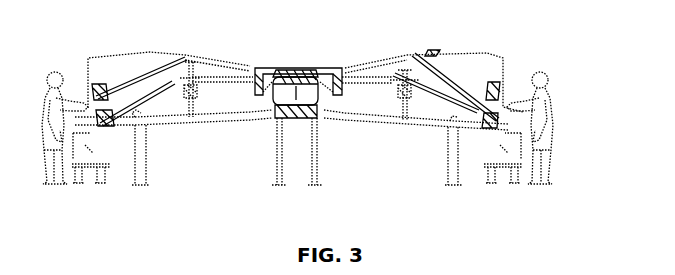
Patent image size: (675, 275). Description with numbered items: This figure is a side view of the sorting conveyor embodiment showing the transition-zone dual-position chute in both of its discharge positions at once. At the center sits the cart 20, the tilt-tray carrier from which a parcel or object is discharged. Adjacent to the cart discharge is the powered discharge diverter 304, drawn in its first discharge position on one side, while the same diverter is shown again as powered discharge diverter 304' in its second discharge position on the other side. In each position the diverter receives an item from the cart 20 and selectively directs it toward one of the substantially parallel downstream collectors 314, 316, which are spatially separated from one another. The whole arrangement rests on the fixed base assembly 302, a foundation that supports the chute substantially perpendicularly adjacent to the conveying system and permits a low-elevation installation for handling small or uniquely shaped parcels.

The cart 20 is at (275, 64).
The fixed base assembly 302 is at (450, 152).
The powered discharge diverter 304 is at (432, 65).
The powered discharge diverter 304' is at (170, 104).
The downstream collector 314 is at (442, 70).
The downstream collector 316 is at (460, 96).